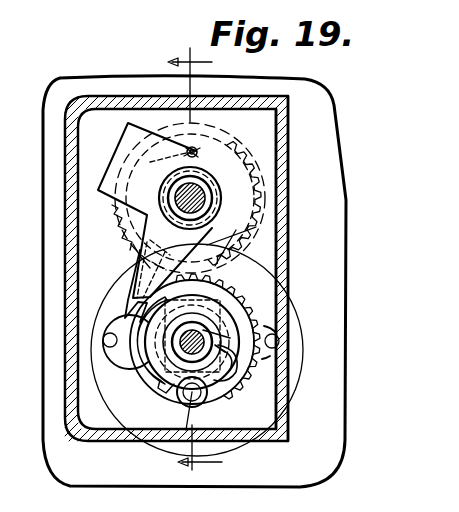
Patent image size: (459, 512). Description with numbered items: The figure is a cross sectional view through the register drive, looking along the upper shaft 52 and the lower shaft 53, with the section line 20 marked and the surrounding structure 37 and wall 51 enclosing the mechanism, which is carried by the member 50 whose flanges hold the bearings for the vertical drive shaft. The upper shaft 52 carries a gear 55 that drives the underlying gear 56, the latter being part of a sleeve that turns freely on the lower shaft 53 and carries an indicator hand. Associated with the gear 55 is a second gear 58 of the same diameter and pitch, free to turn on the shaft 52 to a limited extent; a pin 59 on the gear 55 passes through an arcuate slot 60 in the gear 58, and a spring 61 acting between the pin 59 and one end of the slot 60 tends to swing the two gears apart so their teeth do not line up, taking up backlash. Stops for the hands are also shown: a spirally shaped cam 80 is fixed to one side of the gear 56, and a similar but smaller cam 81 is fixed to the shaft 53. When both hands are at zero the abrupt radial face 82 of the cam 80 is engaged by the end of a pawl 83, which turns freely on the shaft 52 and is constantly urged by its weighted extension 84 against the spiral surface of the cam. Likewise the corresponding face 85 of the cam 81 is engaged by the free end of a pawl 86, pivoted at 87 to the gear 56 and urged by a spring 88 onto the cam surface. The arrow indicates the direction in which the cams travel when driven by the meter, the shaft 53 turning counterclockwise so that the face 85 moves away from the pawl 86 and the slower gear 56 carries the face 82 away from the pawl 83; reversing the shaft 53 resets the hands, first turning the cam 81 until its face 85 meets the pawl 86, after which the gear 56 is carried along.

The section line 20 is at (190, 262).
The housing 37 is at (320, 422).
The member 50 is at (100, 100).
The casing side wall 51 is at (282, 140).
The upper shaft 52 is at (205, 200).
The lower shaft 53 is at (226, 278).
The gear 55 is at (132, 244).
The gear 56 is at (230, 246).
The second gear 58 is at (113, 206).
The pin 59 is at (161, 163).
The arcuate slot 60 is at (200, 152).
The spring 61 is at (168, 197).
The cam 80 is at (142, 366).
The cam 81 is at (230, 338).
The radial face 82 is at (128, 308).
The pawl 83 is at (139, 269).
The weighted extension 84 is at (125, 140).
The face 85 is at (231, 363).
The pawl 86 is at (204, 392).
The pivot 87 is at (186, 430).
The spring 88 is at (158, 373).